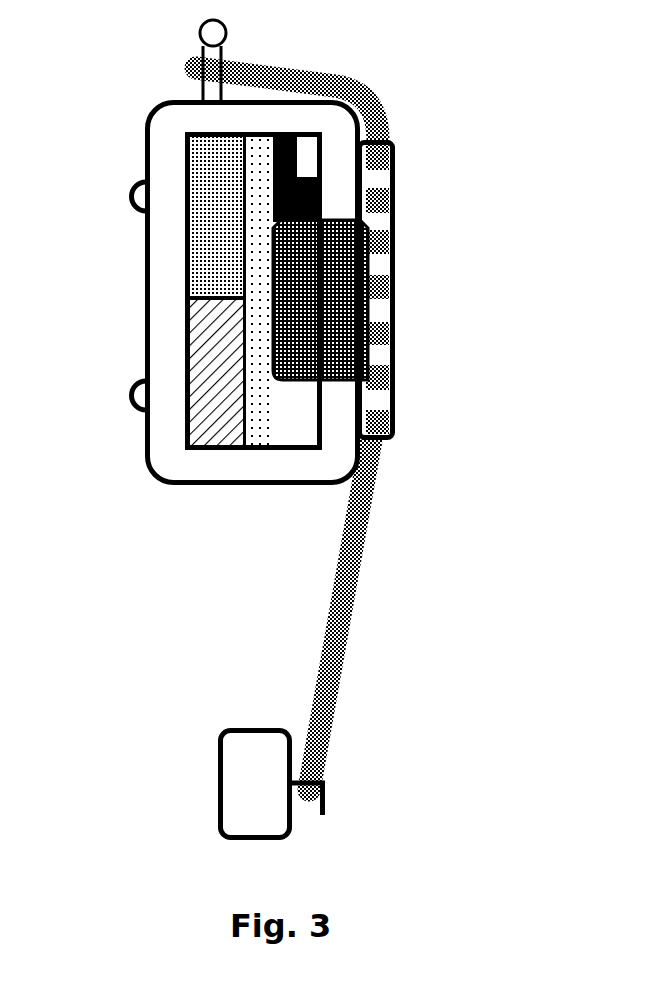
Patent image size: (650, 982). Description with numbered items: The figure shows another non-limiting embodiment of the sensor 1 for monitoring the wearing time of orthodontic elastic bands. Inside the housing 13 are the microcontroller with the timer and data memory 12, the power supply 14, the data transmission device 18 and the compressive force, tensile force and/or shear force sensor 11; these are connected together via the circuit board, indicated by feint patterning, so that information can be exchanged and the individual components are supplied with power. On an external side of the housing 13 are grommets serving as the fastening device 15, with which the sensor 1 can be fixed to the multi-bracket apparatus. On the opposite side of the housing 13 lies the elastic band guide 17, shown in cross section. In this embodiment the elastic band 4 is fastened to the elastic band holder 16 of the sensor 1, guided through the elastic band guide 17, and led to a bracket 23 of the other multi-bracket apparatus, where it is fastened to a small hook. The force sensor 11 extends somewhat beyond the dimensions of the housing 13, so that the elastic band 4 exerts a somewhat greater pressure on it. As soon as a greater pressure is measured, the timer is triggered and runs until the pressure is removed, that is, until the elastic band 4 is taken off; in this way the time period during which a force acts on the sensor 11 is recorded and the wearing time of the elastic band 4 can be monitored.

The sensor 1 is at (284, 400).
The elastic band 4 is at (355, 97).
The compressive force, tensile force and/or shear force sensor 11 is at (368, 270).
The microcontroller with timer and data memory 12 is at (200, 410).
The housing 13 is at (343, 447).
The power supply 14 is at (207, 170).
The fastening device 15 is at (128, 388).
The elastic band holder 16 is at (213, 35).
The elastic band guide 17 is at (393, 197).
The data transmission device 18 is at (297, 157).
The bracket 23 is at (250, 783).